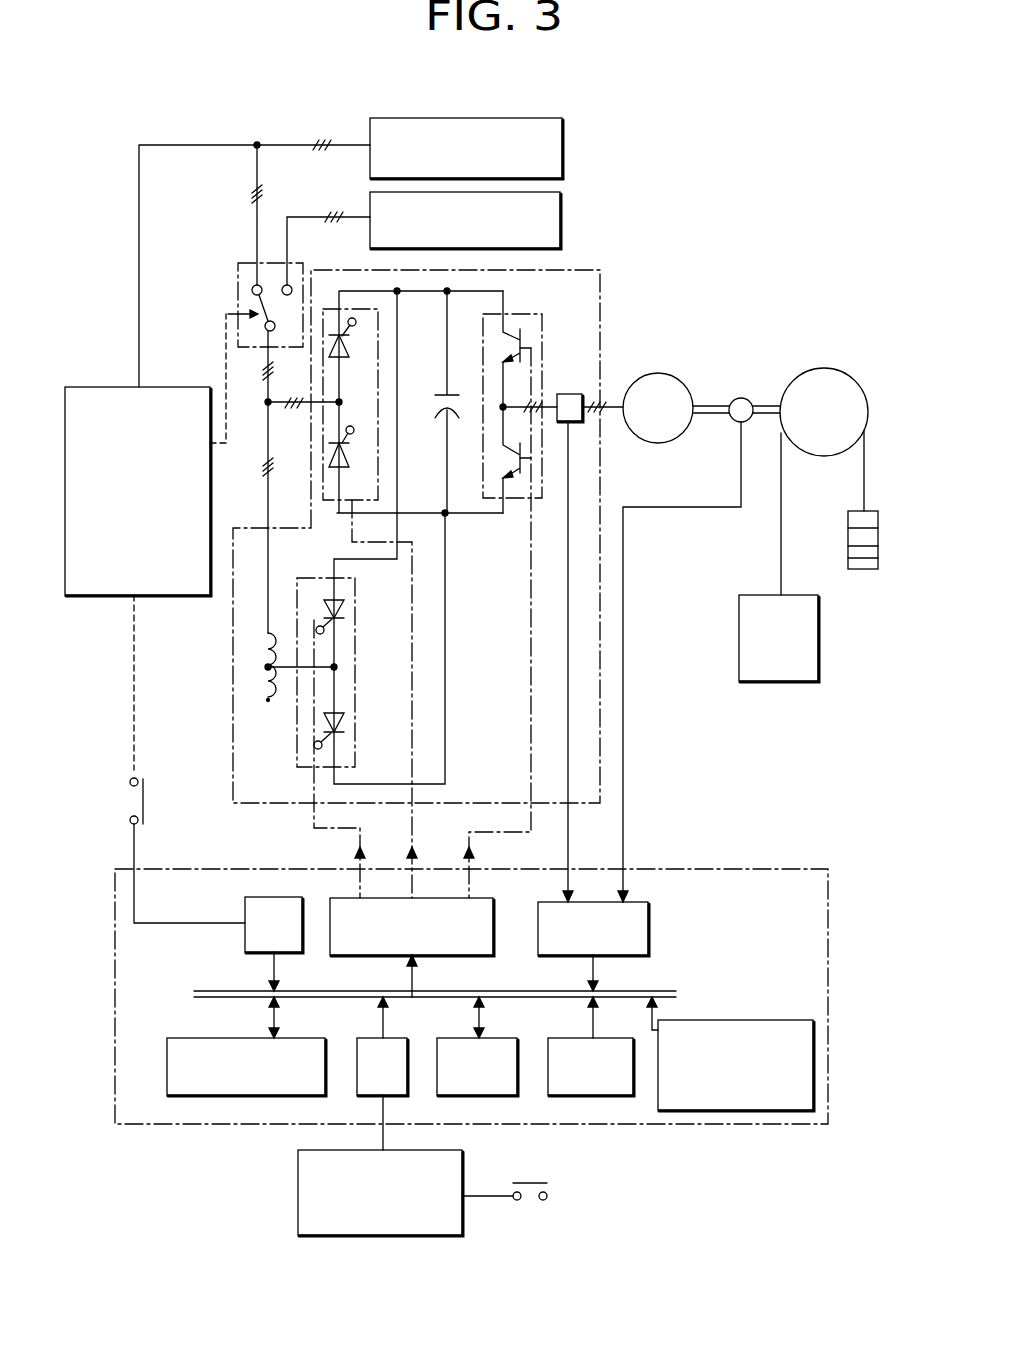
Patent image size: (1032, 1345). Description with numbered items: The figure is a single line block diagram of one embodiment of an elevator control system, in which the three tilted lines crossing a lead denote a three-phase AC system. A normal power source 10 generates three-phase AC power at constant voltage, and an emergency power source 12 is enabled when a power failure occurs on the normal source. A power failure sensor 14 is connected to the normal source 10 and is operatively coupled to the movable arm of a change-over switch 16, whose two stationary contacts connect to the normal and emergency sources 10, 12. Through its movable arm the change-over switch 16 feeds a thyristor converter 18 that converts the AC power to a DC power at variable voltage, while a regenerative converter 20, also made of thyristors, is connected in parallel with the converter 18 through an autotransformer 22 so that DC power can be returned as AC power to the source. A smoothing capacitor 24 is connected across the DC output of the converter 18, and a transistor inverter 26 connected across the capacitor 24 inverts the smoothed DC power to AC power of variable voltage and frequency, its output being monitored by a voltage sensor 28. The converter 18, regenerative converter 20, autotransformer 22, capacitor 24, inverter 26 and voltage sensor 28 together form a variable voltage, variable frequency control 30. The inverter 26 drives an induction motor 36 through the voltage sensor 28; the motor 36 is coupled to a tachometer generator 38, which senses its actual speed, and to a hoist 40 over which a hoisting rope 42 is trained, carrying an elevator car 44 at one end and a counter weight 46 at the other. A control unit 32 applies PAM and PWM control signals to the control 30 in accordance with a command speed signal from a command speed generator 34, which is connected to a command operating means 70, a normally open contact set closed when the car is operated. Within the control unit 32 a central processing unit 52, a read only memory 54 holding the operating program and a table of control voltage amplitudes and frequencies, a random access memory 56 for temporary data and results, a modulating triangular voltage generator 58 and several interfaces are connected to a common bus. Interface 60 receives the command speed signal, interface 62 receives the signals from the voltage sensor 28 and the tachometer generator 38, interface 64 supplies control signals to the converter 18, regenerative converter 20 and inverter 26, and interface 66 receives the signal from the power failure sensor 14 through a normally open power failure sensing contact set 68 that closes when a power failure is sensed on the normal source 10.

The normal power source 10 is at (562, 148).
The emergency power source 12 is at (560, 218).
The power failure sensor 14 is at (101, 387).
The change-over switch 16 is at (238, 266).
The converter 18 is at (328, 500).
The regenerative converter 20 is at (355, 700).
The autotransformer 22 is at (266, 672).
The smoothing capacitor 24 is at (440, 394).
The inverter 26 is at (541, 314).
The voltage sensor 28 is at (570, 394).
The variable voltage, variable frequency control 30 is at (600, 272).
The control unit 32 is at (828, 873).
The command speed generator 34 is at (298, 1193).
The induction motor 36 is at (658, 373).
The tachometer generator 38 is at (741, 398).
The hoist 40 is at (824, 368).
The hoisting rope 42 is at (781, 483).
The elevator car 44 is at (820, 630).
The counter weight 46 is at (878, 535).
The central processing unit 52 is at (205, 1038).
The read only memory 54 is at (580, 1038).
The random access memory 56 is at (470, 1038).
The modulating triangular voltage generator 58 is at (750, 1020).
The interface 60 is at (372, 1038).
The interface 62 is at (648, 928).
The interface 64 is at (485, 955).
The interface 66 is at (245, 905).
The power failure sensing contact set 68 is at (146, 800).
The command operating means 70 is at (530, 1182).